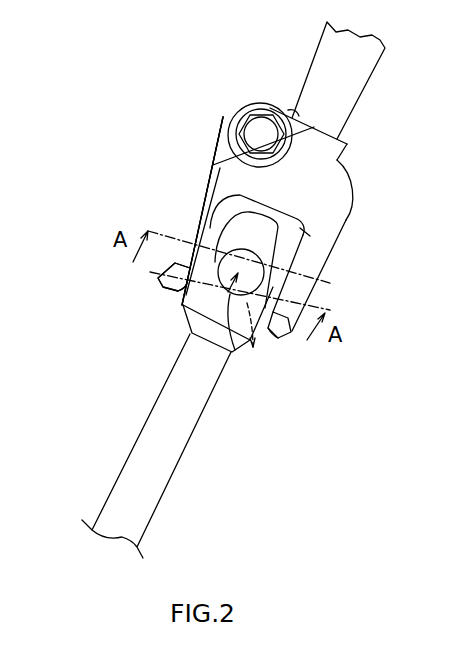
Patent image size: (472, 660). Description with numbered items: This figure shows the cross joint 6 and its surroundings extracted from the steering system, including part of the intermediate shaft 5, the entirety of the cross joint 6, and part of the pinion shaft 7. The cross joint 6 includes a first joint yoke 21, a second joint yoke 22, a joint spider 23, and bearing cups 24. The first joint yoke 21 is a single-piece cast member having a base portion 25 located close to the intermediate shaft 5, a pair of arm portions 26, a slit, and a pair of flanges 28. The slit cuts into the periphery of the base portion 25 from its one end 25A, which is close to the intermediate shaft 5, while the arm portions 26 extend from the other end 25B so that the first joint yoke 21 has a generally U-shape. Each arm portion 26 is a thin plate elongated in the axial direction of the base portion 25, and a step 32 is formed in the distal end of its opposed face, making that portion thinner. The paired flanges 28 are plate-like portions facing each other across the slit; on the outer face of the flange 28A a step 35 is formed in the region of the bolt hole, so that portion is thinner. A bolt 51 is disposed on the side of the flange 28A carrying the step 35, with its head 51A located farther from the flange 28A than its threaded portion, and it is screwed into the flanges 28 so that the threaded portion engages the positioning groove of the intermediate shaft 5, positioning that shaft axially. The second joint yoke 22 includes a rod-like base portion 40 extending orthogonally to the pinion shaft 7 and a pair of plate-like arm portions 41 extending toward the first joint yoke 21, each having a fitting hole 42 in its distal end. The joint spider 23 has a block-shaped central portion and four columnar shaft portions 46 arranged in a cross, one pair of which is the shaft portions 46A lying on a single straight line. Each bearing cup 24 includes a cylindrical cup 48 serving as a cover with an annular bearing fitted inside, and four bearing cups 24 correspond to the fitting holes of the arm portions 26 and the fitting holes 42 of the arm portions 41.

The intermediate shaft 5 is at (359, 107).
The cross joint 6 is at (202, 161).
The pinion shaft 7 is at (170, 499).
The first joint yoke 21 is at (356, 219).
The second joint yoke 22 is at (173, 307).
The joint spider 23 is at (253, 349).
The bearing cup 24 is at (229, 351).
The base portion 25 is at (328, 190).
The one end 25A is at (343, 141).
The other end 25B is at (305, 232).
The arm portion 26 is at (193, 231).
The flange 28 is at (179, 210).
The flange 28A is at (223, 162).
The step 32 is at (183, 284).
The step 35 is at (296, 118).
The base portion 40 is at (200, 334).
The arm portion 41 is at (215, 224).
The fitting hole 42 is at (250, 272).
The shaft portion 46 is at (190, 268).
The shaft portion 46A is at (116, 277).
The cup 48 is at (252, 238).
The bolt 51 is at (260, 135).
The head 51A is at (253, 137).